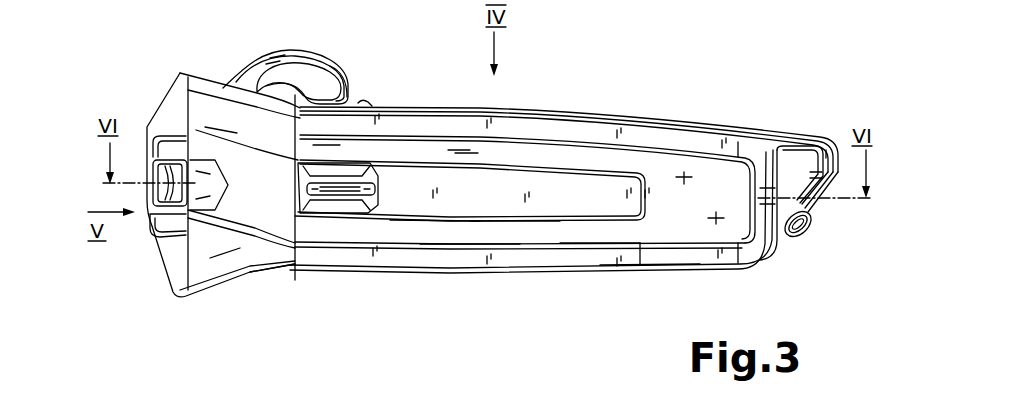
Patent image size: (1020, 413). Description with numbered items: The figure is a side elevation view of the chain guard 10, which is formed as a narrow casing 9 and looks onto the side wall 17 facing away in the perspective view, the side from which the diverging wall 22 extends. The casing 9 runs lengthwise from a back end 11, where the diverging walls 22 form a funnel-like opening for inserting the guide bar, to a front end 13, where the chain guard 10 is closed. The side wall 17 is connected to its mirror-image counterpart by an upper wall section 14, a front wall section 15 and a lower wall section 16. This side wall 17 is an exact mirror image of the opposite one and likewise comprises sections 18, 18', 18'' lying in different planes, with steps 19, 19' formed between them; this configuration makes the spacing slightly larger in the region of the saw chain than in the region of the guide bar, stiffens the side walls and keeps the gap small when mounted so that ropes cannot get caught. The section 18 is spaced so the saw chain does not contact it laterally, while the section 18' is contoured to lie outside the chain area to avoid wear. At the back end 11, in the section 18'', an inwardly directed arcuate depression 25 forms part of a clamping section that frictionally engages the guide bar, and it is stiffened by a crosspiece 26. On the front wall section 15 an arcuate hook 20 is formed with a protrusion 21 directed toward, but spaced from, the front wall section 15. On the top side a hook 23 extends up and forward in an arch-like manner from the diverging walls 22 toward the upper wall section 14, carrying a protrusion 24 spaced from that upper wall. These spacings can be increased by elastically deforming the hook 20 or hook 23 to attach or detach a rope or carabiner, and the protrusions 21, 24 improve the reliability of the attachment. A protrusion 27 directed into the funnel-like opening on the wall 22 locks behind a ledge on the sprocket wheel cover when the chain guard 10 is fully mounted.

The casing 9 is at (448, 97).
The chain guard 10 is at (538, 88).
The back end 11 is at (270, 283).
The front end 13 is at (755, 111).
The upper wall section 14 is at (683, 122).
The front wall section 15 is at (767, 250).
The lower wall section 16 is at (554, 283).
The side wall 17 is at (593, 147).
The section 18 is at (600, 285).
The section 18' is at (515, 274).
The section 18'' is at (435, 262).
The step 19 is at (650, 286).
The step 19' is at (470, 275).
The hook 20 is at (818, 141).
The protrusion 21 is at (808, 227).
The diverging wall 22 is at (160, 250).
The hook 23 is at (283, 55).
The protrusion 24 is at (338, 86).
The arcuate depression 25 is at (330, 203).
The crosspiece 26 is at (352, 191).
The protrusion 27 is at (148, 200).